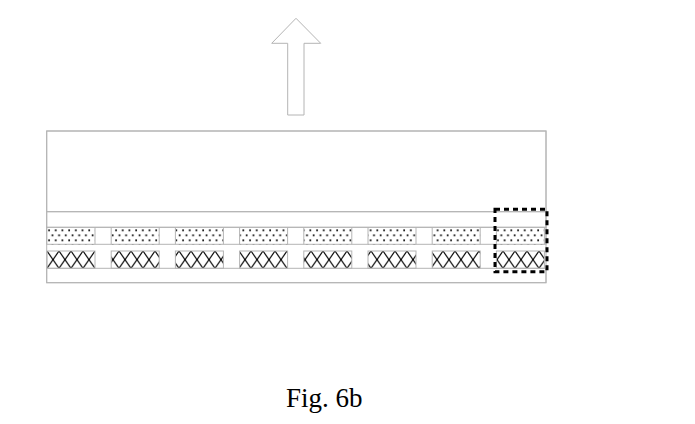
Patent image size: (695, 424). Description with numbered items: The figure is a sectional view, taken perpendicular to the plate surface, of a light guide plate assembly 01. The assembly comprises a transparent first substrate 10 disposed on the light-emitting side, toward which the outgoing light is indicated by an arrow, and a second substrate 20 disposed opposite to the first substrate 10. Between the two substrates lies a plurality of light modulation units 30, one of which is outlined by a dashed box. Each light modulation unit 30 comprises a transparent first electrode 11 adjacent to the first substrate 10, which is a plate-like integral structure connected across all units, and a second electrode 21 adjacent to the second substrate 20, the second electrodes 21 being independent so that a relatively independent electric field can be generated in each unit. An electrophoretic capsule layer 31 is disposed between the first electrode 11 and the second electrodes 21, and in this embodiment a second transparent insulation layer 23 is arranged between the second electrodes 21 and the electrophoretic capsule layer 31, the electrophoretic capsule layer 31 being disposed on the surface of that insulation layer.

The light guide plate assembly 01 is at (59, 45).
The first substrate 10 is at (528, 170).
The first electrode 11 is at (528, 218).
The electrophoretic capsule layer 31 is at (528, 235).
The second electrode 21 is at (536, 255).
The second transparent insulation layer 23 is at (297, 260).
The second substrate 20 is at (528, 273).
The light modulation unit 30 is at (494, 270).